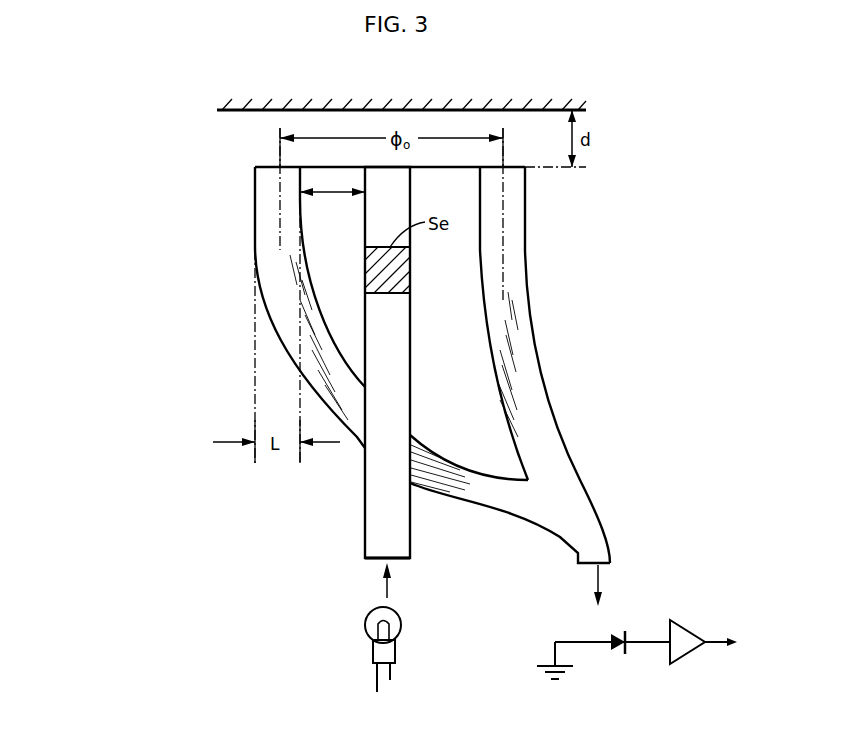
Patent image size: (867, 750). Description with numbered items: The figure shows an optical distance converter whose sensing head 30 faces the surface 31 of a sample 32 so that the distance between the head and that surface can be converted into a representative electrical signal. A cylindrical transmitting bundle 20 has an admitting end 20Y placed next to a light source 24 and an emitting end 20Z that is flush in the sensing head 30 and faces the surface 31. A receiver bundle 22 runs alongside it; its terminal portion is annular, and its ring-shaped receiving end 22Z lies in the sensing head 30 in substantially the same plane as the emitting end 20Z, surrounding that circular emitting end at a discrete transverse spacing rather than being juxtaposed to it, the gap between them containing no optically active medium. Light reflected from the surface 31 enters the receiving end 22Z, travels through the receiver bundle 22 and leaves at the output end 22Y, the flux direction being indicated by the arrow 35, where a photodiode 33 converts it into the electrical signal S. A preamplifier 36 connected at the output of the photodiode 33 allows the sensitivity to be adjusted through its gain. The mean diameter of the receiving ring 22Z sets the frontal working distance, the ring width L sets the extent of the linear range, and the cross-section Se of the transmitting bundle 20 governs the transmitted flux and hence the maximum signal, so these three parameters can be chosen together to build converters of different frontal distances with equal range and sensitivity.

The transmitting bundle 20 is at (383, 511).
The admitting end 20Y is at (375, 561).
The emitting end 20Z is at (411, 156).
The receiver bundle 22 is at (563, 495).
The output end 22Y is at (608, 565).
The receiving end 22Z is at (505, 165).
The light source 24 is at (391, 616).
The sensing head 30 is at (343, 158).
The surface 31 is at (243, 112).
The sample 32 is at (250, 105).
The photodiode 33 is at (624, 656).
The arrow 35 is at (334, 194).
The preamplifier 36 is at (689, 649).